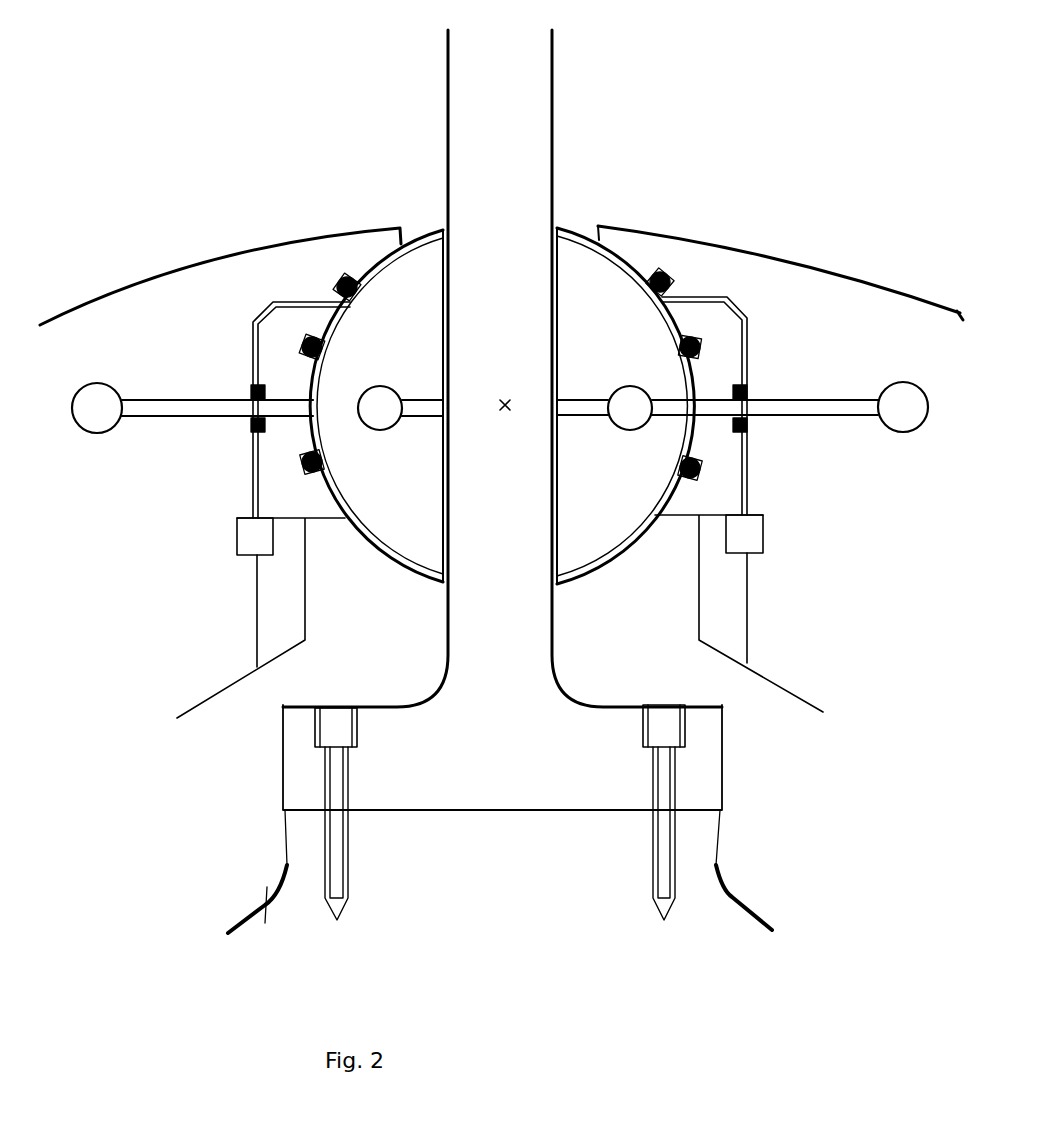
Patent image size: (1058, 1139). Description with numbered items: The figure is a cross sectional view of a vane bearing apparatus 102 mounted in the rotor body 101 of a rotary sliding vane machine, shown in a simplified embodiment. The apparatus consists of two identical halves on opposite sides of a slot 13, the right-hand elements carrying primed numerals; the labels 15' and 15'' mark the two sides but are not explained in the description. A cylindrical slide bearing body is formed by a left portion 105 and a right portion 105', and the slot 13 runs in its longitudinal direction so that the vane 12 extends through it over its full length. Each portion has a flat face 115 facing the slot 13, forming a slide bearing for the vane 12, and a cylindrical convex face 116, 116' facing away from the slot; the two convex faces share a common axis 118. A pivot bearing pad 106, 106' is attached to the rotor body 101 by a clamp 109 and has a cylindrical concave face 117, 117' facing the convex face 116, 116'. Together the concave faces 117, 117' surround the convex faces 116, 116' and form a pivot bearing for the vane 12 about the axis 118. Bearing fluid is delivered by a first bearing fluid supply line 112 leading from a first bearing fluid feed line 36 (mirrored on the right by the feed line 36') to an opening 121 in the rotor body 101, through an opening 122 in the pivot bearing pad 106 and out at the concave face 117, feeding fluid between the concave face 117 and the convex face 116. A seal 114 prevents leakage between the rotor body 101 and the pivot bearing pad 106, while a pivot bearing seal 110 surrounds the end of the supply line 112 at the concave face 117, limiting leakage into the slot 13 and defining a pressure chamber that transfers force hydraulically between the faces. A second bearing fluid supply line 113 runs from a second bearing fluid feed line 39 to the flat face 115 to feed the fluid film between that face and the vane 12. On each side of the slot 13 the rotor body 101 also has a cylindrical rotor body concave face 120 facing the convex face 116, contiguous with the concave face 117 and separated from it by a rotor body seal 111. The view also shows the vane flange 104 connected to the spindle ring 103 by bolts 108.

The vane 12 is at (472, 120).
The slot 13 is at (447, 228).
The first section 15' is at (334, 69).
The second section 15'' is at (599, 65).
The first bearing fluid feed line 36 is at (86, 456).
The first bearing fluid feed line 36' is at (901, 452).
The second bearing fluid feed line 39 is at (375, 416).
The rotor body 101 is at (97, 623).
The vane bearing apparatus 102 is at (368, 163).
The spindle ring 103 is at (265, 920).
The vane flange 104 is at (295, 767).
The left portion of slide bearing body 105 is at (376, 442).
The right portion of slide bearing body 105' is at (625, 441).
The pivot bearing pad 106 is at (231, 510).
The pivot bearing pad 106' is at (751, 504).
The bolts 108 is at (338, 850).
The clamp 109 is at (240, 535).
The pivot bearing seal 110 is at (312, 347).
The rotor body seal 111 is at (347, 287).
The first bearing fluid supply line 112 is at (170, 400).
The second bearing fluid supply line 113 is at (425, 410).
The seal 114 is at (250, 392).
The slide bearing flat face 115 is at (440, 287).
The slide bearing convex face 116 is at (381, 330).
The slide bearing convex face 116' is at (622, 406).
The pivot bearing concave face 117 is at (388, 505).
The pivot bearing concave face 117' is at (709, 290).
The common axis 118 is at (505, 415).
The rotor body concave face 120 is at (380, 262).
The opening in rotor body 121 is at (253, 410).
The opening in pivot bearing pad 122 is at (272, 414).